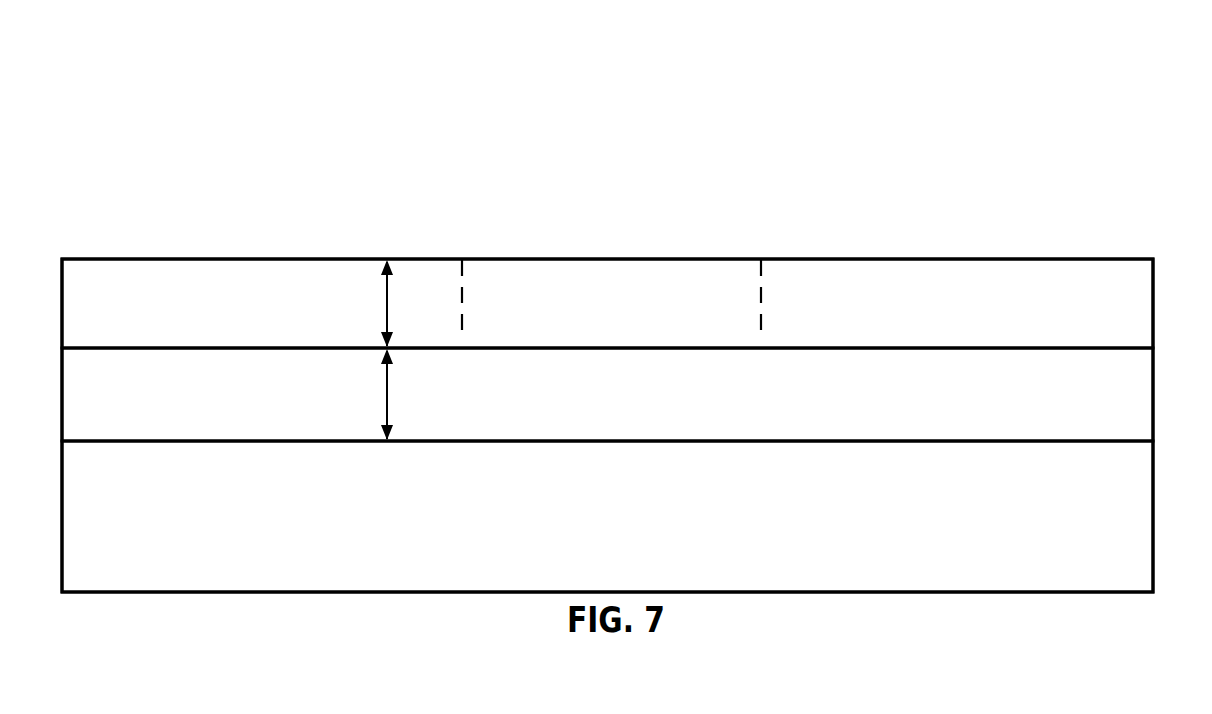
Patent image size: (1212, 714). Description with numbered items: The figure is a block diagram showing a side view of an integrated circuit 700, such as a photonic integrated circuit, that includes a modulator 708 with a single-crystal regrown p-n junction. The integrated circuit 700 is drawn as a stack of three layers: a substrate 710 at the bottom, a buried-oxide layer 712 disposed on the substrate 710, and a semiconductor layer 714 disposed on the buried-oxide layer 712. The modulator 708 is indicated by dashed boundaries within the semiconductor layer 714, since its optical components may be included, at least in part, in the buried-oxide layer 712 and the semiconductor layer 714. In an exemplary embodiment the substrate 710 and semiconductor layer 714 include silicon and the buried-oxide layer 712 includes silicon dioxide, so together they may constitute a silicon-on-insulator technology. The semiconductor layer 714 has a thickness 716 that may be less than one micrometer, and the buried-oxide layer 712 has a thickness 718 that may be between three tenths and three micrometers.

The integrated circuit 700 is at (1008, 113).
The modulator 708 is at (628, 327).
The substrate 710 is at (625, 541).
The buried-oxide layer 712 is at (1145, 417).
The semiconductor layer 714 is at (1145, 326).
The thickness 716 is at (383, 317).
The thickness 718 is at (383, 408).